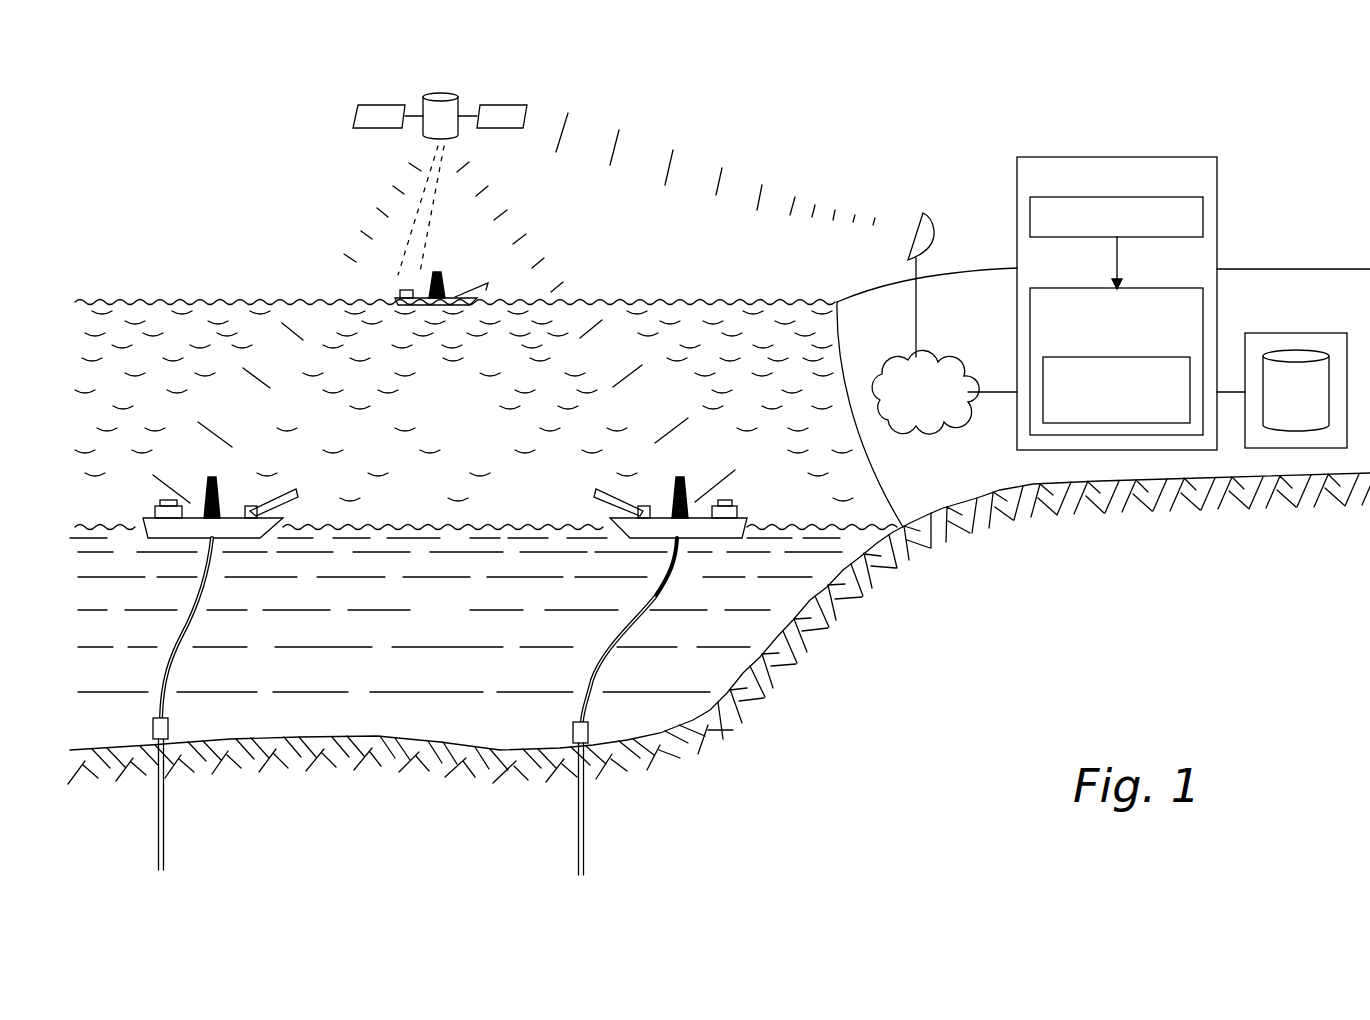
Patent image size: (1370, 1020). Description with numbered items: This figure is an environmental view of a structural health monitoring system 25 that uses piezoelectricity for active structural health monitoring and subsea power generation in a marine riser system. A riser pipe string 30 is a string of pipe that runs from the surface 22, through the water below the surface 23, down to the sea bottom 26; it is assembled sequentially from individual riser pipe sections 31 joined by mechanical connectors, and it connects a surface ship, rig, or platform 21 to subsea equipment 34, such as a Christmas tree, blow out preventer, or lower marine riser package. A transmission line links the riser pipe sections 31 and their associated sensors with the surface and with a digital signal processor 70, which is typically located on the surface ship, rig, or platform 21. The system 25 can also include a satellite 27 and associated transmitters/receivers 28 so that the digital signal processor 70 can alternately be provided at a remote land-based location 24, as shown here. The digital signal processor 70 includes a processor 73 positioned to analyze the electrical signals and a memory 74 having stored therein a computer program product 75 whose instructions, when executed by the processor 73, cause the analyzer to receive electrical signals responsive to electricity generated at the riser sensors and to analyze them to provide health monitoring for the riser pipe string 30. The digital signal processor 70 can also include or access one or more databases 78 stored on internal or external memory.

The surface ship, rig, or platform 21 is at (143, 517).
The surface 22 is at (456, 420).
The below the surface 23 is at (456, 620).
The remote land-based location 24 is at (1270, 157).
The structural health monitoring system 25 is at (238, 158).
The sea bottom 26 is at (428, 743).
The satellite 27 is at (430, 94).
The transmitters/receivers 28 is at (932, 222).
The riser pipe string 30 is at (618, 630).
The riser pipe section 31 is at (660, 593).
The subsea equipment 34 is at (572, 731).
The digital signal processor 70 is at (1117, 288).
The processor 73 is at (1131, 197).
The memory 74 is at (1116, 347).
The computer program product 75 is at (1126, 357).
The database 78 is at (1300, 333).